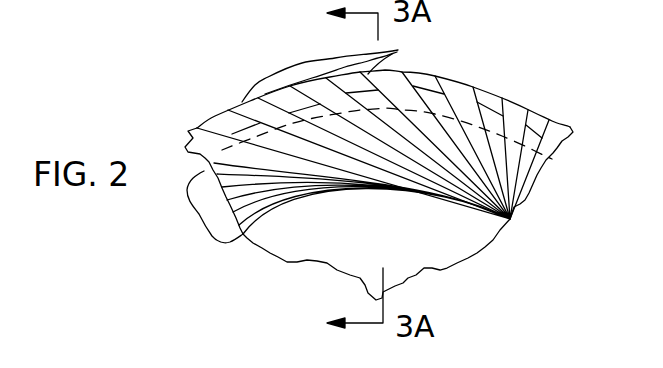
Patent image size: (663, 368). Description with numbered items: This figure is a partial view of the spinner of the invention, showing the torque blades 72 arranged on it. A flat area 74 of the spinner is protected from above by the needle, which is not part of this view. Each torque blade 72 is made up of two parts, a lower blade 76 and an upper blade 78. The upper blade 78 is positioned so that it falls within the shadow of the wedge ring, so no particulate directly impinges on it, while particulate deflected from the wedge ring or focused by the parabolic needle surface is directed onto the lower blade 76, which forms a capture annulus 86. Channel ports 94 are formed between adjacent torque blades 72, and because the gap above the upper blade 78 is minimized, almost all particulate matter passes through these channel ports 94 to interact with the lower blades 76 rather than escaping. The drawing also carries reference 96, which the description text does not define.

The torque blade 72 is at (215, 118).
The flat area 74 is at (399, 235).
The lower blade 76 is at (545, 163).
The upper blade 78 is at (493, 88).
The capture annulus 86 is at (203, 216).
The channel port 94 is at (398, 50).
The seam stitching 96 is at (462, 82).